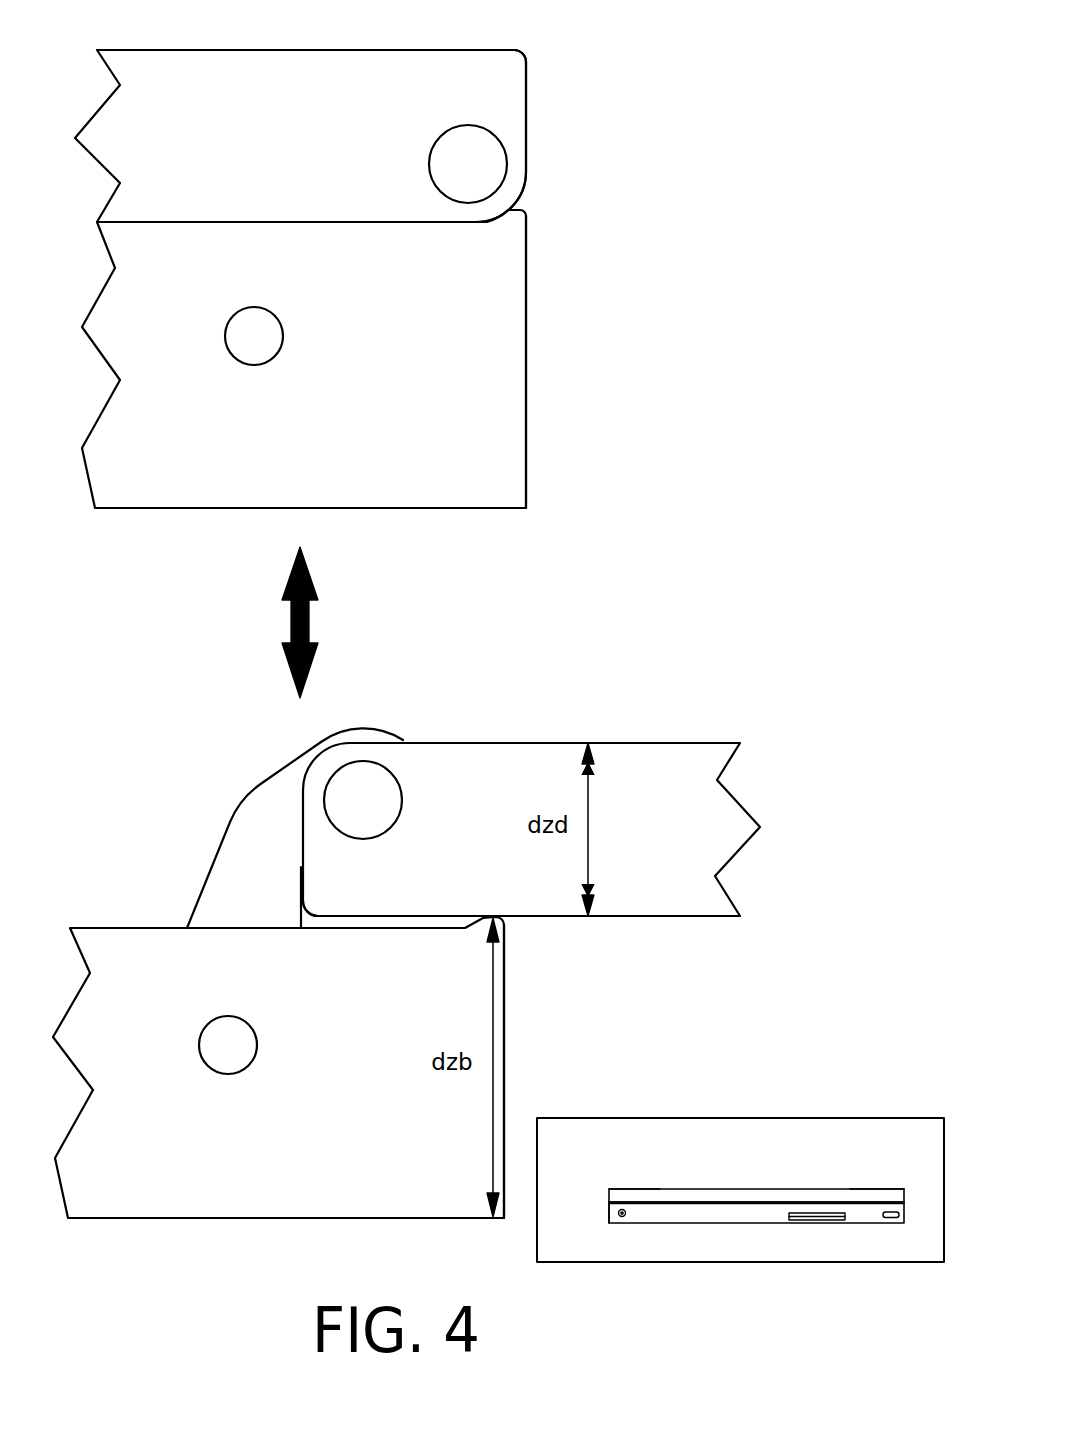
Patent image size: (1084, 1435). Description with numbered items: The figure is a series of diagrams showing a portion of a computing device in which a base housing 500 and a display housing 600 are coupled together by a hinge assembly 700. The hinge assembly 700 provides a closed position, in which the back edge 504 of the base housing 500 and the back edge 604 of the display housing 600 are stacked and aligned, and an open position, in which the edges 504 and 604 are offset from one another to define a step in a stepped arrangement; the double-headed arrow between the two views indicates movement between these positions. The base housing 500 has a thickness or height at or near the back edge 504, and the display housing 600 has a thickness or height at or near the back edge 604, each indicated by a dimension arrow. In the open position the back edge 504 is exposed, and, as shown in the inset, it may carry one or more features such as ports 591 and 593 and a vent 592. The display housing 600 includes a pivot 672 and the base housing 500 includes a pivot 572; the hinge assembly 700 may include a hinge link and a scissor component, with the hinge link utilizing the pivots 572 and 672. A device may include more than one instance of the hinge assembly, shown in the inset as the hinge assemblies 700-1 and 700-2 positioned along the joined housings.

The base housing 500 is at (292, 420).
The back edge 504 is at (527, 340).
The pivot 572 is at (235, 313).
The port 591 is at (625, 1220).
The vent 592 is at (810, 1223).
The port 593 is at (897, 1223).
The display housing 600 is at (292, 172).
The back edge 604 is at (523, 130).
The pivot 672 is at (433, 181).
The hinge assembly 700 is at (170, 805).
The hinge assembly 700-1 is at (655, 1183).
The hinge assembly 700-2 is at (868, 1183).